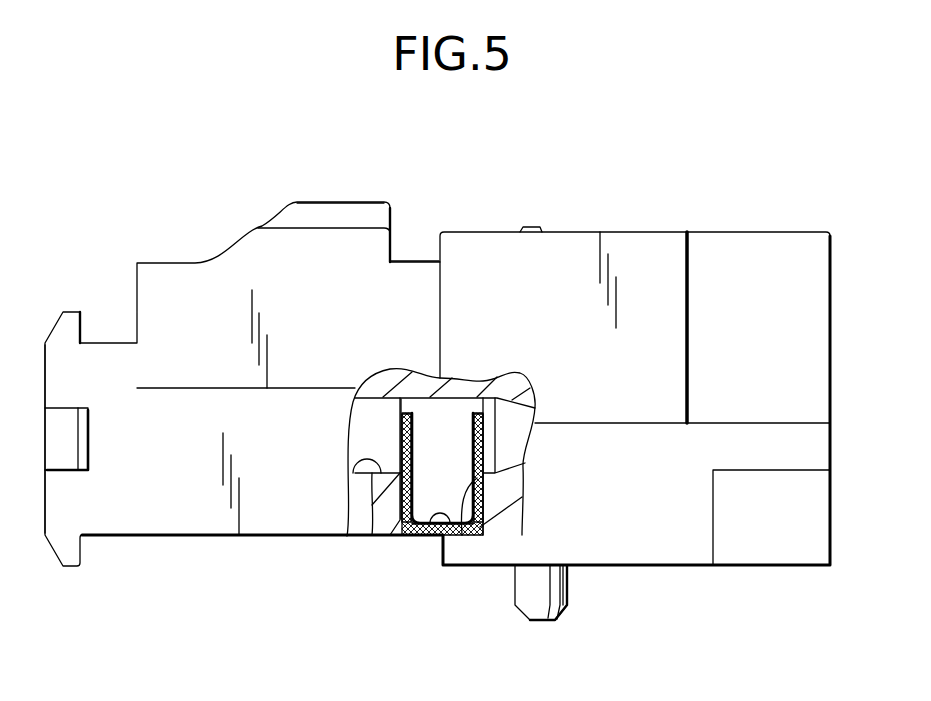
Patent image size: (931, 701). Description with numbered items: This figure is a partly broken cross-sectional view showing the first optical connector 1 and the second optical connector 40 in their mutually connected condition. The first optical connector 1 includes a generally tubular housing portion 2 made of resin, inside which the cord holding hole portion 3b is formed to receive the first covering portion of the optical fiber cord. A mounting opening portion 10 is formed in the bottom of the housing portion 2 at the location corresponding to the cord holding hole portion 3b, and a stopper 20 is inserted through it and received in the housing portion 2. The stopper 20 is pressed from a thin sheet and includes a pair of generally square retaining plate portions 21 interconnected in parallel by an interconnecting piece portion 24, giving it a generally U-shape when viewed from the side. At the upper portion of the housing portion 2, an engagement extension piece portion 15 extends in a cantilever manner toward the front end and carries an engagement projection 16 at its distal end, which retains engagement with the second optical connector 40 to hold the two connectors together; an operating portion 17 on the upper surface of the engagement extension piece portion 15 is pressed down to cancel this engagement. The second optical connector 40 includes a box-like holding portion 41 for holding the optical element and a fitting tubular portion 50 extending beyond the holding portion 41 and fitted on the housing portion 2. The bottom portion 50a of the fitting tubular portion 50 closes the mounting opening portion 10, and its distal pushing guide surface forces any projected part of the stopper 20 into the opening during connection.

The first optical connector 1 is at (280, 166).
The housing portion 2 is at (187, 518).
The cord holding hole portion 3b is at (347, 537).
The mounting opening portion 10 is at (399, 537).
The engagement extension piece portion 15 is at (418, 262).
The engagement projection 16 is at (530, 227).
The operating portion 17 is at (340, 202).
The stopper 20 is at (503, 631).
The retaining plate portions 21 is at (415, 537).
The interconnecting piece portion 24 is at (440, 537).
The second optical connector 40 is at (681, 196).
The holding portion 41 is at (771, 552).
The fitting tubular portion 50 is at (648, 552).
The bottom portion 50a is at (535, 548).